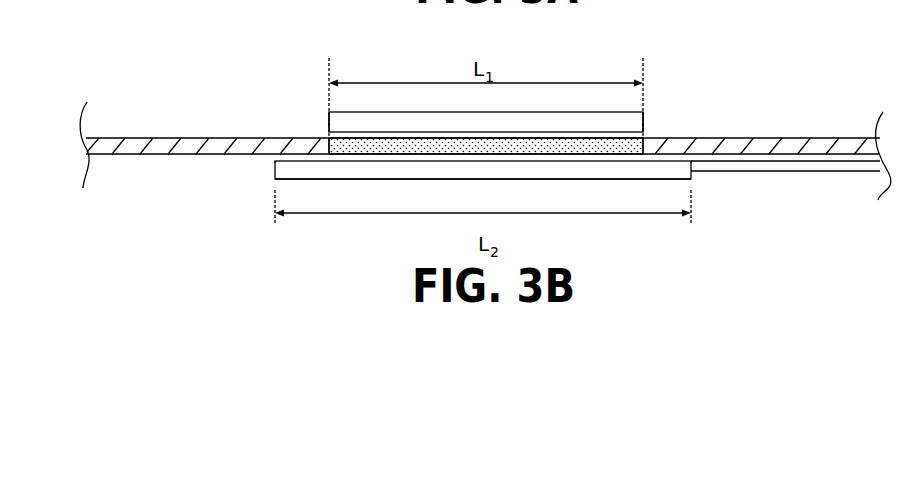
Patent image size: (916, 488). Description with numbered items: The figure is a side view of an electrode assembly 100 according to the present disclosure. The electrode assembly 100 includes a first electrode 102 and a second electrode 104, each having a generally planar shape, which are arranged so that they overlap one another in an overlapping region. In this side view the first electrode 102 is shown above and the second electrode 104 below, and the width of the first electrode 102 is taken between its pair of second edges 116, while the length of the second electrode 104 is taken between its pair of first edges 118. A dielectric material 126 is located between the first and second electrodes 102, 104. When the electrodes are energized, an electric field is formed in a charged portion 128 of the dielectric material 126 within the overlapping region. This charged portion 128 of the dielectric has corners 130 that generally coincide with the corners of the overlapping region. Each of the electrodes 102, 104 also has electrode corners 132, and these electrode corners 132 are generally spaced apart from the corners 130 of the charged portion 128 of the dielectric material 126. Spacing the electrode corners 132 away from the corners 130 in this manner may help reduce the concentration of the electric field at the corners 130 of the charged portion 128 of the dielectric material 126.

The electrode assembly 100 is at (100, 62).
The first electrode 102 is at (528, 112).
The second electrode 104 is at (458, 180).
The second edges 116 is at (327, 118).
The first edges 118 is at (266, 173).
The dielectric material 126 is at (798, 138).
The charged portion 128 is at (366, 140).
The corners 130 is at (327, 138).
The electrode corners 132 is at (328, 107).